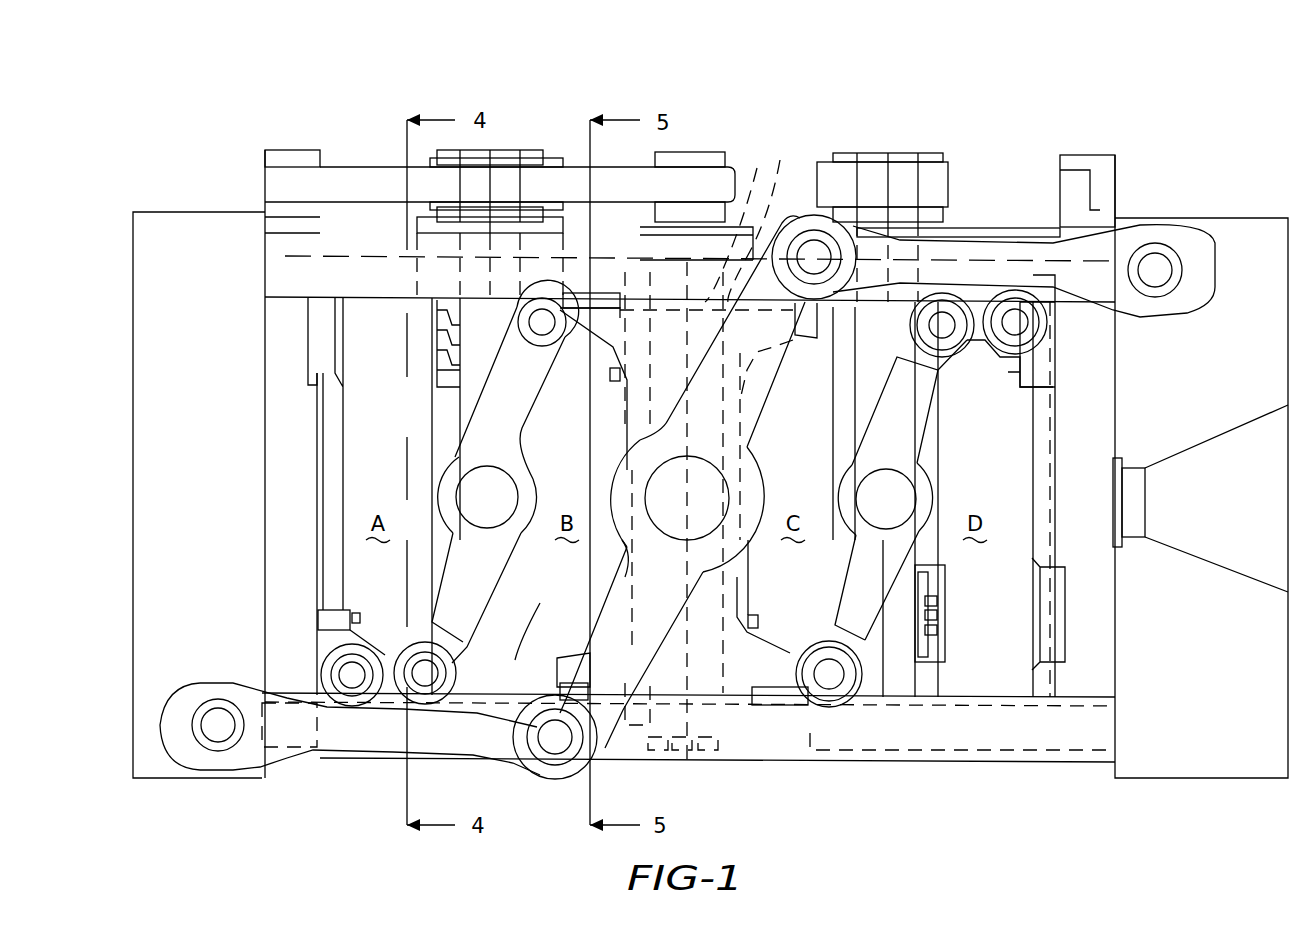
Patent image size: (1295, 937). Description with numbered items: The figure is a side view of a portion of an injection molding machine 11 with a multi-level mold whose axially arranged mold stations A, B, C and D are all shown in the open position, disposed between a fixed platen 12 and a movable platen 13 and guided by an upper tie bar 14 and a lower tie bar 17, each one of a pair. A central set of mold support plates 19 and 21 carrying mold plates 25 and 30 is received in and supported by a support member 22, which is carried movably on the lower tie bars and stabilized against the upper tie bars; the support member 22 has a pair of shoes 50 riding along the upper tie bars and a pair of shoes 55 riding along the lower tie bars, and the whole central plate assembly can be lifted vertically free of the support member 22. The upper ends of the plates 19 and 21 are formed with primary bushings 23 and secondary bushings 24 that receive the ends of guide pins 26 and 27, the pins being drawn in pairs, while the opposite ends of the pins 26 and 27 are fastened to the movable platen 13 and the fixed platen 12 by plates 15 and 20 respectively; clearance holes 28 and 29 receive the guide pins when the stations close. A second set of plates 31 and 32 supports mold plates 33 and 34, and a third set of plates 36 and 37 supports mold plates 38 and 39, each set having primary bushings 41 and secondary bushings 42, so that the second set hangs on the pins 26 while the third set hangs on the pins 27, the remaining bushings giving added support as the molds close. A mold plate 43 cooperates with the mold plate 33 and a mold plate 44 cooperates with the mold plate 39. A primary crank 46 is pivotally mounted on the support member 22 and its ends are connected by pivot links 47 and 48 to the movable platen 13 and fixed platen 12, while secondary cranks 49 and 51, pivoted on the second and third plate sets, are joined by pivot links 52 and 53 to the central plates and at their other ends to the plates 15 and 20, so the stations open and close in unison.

The injection molding machine portion 11 is at (634, 91).
The fixed platen 12 is at (1189, 694).
The movable platen 13 is at (176, 532).
The upper tie bar 14 is at (364, 289).
The plate 15 is at (269, 537).
The lower tie bar 17 is at (1010, 762).
The mold support plate 19 is at (667, 278).
The plate 20 is at (1066, 477).
The mold support plate 21 is at (780, 160).
The support member 22 is at (800, 340).
The primary sleeve bearing 23 is at (690, 167).
The secondary bushing 24 is at (757, 168).
The mold plate 25 is at (627, 408).
The guide pin 26 is at (358, 167).
The guide pin 27 is at (993, 227).
The clearance holes 28 is at (287, 255).
The clearance holes 29 is at (1093, 170).
The mold plate 30 is at (745, 443).
The plate 31 is at (470, 372).
The plate 32 is at (540, 603).
The mold plate 33 is at (437, 548).
The mold plate 34 is at (535, 460).
The plate 36 is at (863, 370).
The plate 37 is at (905, 650).
The mold plate 38 is at (833, 568).
The mold plate 39 is at (932, 550).
The primary bushings 41 is at (505, 167).
The secondary bushings 42 is at (417, 222).
The mold plate 43 is at (333, 457).
The mold plate 44 is at (1033, 490).
The primary crank 46 is at (655, 640).
The pivot link 47 is at (348, 738).
The pivot link 48 is at (1095, 285).
The secondary crank 49 is at (538, 432).
The shoe 50 is at (572, 297).
The secondary crank 51 is at (923, 400).
The pivot link 52 is at (823, 663).
The pivot link 53 is at (545, 330).
The shoe 55 is at (600, 718).